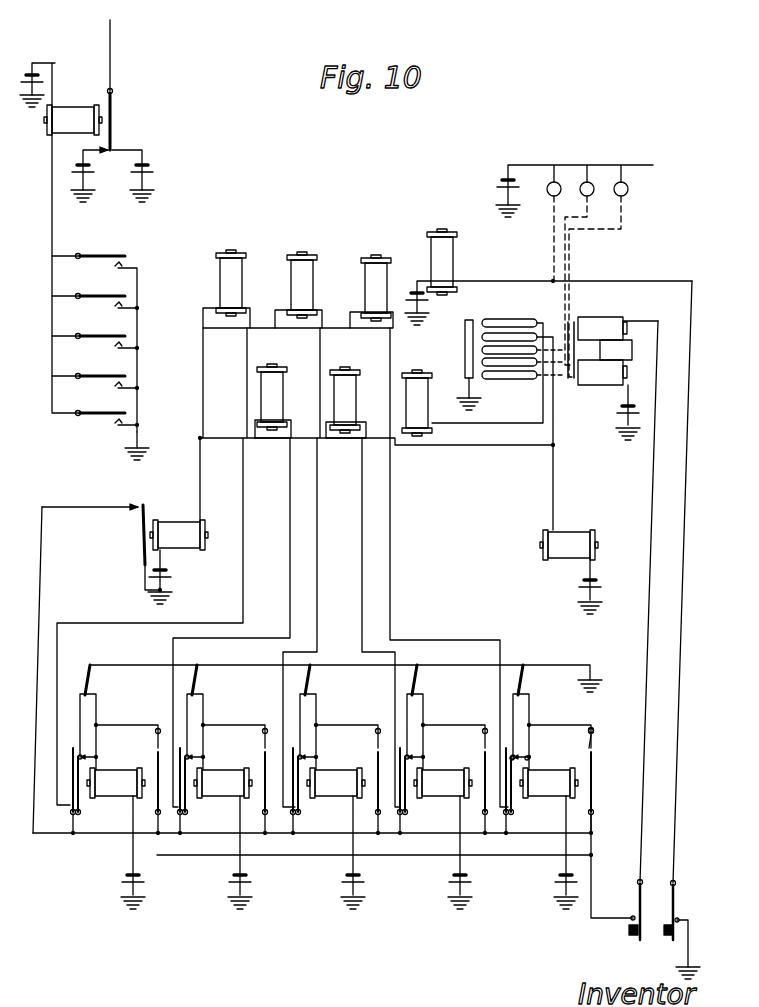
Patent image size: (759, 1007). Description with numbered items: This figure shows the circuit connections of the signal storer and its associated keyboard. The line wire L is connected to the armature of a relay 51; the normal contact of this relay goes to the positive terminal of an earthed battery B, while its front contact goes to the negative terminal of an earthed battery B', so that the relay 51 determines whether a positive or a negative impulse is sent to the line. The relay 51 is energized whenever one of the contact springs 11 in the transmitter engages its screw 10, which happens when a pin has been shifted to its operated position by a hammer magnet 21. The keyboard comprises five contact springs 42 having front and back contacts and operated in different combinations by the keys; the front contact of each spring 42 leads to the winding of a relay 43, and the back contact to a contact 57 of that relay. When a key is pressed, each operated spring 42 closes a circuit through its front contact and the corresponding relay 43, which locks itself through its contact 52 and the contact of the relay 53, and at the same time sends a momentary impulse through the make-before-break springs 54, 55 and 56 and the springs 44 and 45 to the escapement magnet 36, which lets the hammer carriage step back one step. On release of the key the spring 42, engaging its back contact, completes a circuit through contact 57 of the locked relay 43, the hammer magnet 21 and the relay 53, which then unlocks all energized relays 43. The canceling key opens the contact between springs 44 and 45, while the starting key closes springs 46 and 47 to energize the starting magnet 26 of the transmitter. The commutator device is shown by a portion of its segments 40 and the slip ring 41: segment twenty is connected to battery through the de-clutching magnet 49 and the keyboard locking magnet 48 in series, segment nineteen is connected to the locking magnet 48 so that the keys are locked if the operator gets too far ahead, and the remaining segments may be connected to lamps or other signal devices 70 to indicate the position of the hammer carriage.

The line conductor L is at (111, 33).
The relay 51 is at (78, 107).
The earthed battery B is at (165, 164).
The earthed battery B' is at (65, 164).
The screws 10 is at (124, 268).
The contact springs 11 is at (98, 256).
The hammer magnets 21 is at (376, 258).
The starting magnet 26 is at (455, 250).
The lamps or signal devices 70 is at (590, 183).
The slip ring 41 is at (470, 320).
The segments 40 is at (533, 323).
The escapement magnet 36 is at (603, 318).
The de-clutching magnet 49 is at (418, 373).
The keyboard locking magnet 48 is at (572, 535).
The relay 53 is at (178, 522).
The contact springs 42 is at (90, 665).
The relay 43 is at (108, 770).
The contact 57 is at (512, 756).
The contact 52 is at (528, 756).
The spring 54 is at (594, 728).
The spring 55 is at (595, 740).
The spring 56 is at (593, 804).
The spring 44 is at (633, 916).
The spring 45 is at (638, 883).
The spring 46 is at (676, 885).
The spring 47 is at (679, 919).